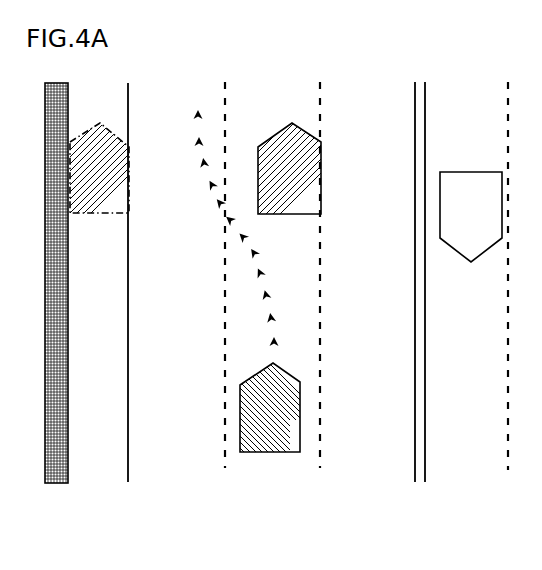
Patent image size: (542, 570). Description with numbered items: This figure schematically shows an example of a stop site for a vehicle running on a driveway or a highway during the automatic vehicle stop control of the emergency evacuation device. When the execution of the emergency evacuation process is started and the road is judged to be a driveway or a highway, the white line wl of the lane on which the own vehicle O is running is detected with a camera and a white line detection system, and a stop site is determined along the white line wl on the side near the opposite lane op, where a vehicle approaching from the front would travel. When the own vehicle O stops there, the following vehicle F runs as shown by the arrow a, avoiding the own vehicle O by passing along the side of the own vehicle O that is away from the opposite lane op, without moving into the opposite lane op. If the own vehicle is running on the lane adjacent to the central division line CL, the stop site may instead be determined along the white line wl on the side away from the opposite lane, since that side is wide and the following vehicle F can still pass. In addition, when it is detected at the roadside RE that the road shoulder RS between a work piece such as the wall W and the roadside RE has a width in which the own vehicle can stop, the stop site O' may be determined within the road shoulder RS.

The wall W is at (53, 496).
The roadside RE is at (133, 481).
The road shoulder RS is at (106, 390).
The stop site O' is at (127, 164).
The own vehicle O is at (317, 171).
The following vehicle F is at (247, 404).
The arrow a is at (206, 187).
The white line wl is at (216, 461).
The central division line CL is at (405, 469).
The opposite lane op is at (478, 172).